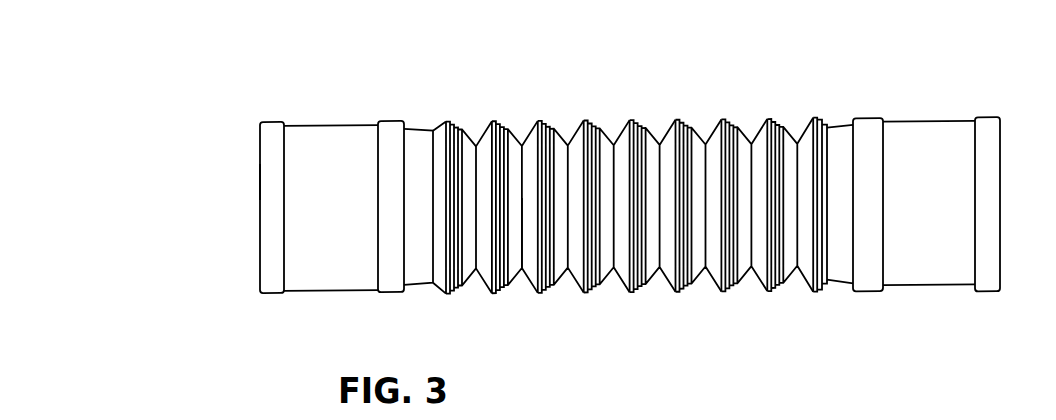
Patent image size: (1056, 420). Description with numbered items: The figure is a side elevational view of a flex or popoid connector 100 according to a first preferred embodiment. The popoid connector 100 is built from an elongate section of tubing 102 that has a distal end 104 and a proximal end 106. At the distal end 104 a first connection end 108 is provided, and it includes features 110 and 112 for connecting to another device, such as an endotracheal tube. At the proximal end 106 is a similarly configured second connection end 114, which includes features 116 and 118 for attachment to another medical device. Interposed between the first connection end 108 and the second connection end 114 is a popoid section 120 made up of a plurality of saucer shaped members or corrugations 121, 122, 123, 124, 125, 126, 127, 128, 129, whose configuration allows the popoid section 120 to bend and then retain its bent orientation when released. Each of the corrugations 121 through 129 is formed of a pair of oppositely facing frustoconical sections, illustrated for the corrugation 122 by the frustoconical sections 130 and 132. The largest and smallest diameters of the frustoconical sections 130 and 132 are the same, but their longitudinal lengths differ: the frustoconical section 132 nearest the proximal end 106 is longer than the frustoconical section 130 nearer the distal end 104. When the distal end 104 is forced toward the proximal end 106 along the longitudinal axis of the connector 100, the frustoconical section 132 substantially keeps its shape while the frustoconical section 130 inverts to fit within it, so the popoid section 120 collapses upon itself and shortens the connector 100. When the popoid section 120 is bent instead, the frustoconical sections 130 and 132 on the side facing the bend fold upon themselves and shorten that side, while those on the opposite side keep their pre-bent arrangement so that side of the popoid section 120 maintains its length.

The popoid connector 100 is at (904, 37).
The elongate section of tubing 102 is at (317, 125).
The distal end 104 is at (260, 164).
The proximal end 106 is at (1003, 150).
The first connection end 108 is at (312, 291).
The connecting feature 110 is at (273, 294).
The connecting feature 112 is at (393, 294).
The second connection end 114 is at (923, 288).
The attachment feature 116 is at (870, 294).
The attachment feature 118 is at (990, 294).
The popoid section 120 is at (731, 326).
The corrugation 121 is at (445, 122).
The corrugation 122 is at (489, 121).
The corrugation 123 is at (538, 121).
The corrugation 124 is at (584, 121).
The corrugation 125 is at (631, 121).
The corrugation 126 is at (676, 120).
The corrugation 127 is at (721, 120).
The corrugation 128 is at (767, 120).
The corrugation 129 is at (813, 119).
The frustoconical section 130 is at (474, 290).
The frustoconical section 132 is at (520, 290).